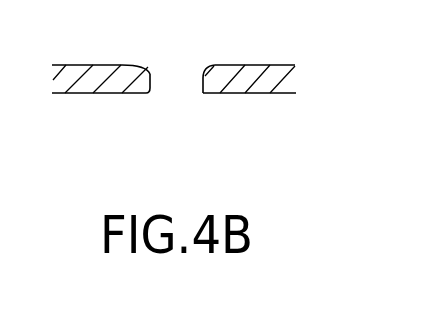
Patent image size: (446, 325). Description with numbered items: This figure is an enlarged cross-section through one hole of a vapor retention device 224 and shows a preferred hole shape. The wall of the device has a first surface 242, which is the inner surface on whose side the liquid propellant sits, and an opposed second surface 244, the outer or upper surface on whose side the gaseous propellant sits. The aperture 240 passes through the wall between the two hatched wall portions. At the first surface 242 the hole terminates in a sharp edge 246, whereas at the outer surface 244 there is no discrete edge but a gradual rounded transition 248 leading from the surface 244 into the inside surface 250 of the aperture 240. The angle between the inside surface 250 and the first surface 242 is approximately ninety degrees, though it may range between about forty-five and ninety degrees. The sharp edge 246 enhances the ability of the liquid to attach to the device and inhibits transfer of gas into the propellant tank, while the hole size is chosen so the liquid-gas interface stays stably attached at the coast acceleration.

The vapor retention device 224 is at (266, 80).
The aperture 240 is at (180, 97).
The first surface 242 is at (95, 94).
The second surface 244 is at (73, 64).
The sharp edge 246 is at (201, 94).
The rounded transition 248 is at (148, 71).
The inside surface 250 is at (150, 95).